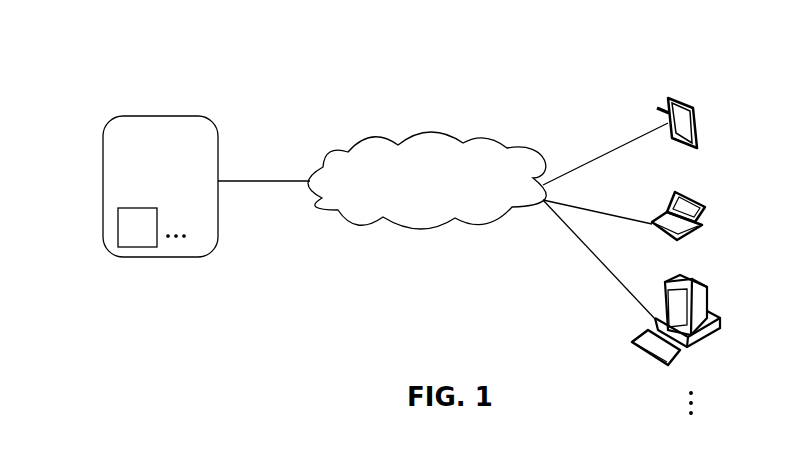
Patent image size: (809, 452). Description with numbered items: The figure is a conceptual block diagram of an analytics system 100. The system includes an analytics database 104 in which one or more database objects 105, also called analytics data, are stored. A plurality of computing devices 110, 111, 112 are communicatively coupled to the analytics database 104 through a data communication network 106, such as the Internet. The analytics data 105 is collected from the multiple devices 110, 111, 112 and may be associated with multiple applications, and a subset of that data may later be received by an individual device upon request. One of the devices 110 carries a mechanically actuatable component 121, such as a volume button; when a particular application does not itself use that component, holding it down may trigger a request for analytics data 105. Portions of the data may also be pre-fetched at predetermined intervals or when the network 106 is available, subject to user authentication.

The analytics system 100 is at (497, 35).
The analytics database 104 is at (141, 198).
The database objects 105 is at (118, 226).
The data communication network 106 is at (408, 191).
The computing device 110 is at (698, 146).
The computing device 111 is at (705, 215).
The computing device 112 is at (715, 308).
The mechanically actuatable component 121 is at (675, 146).